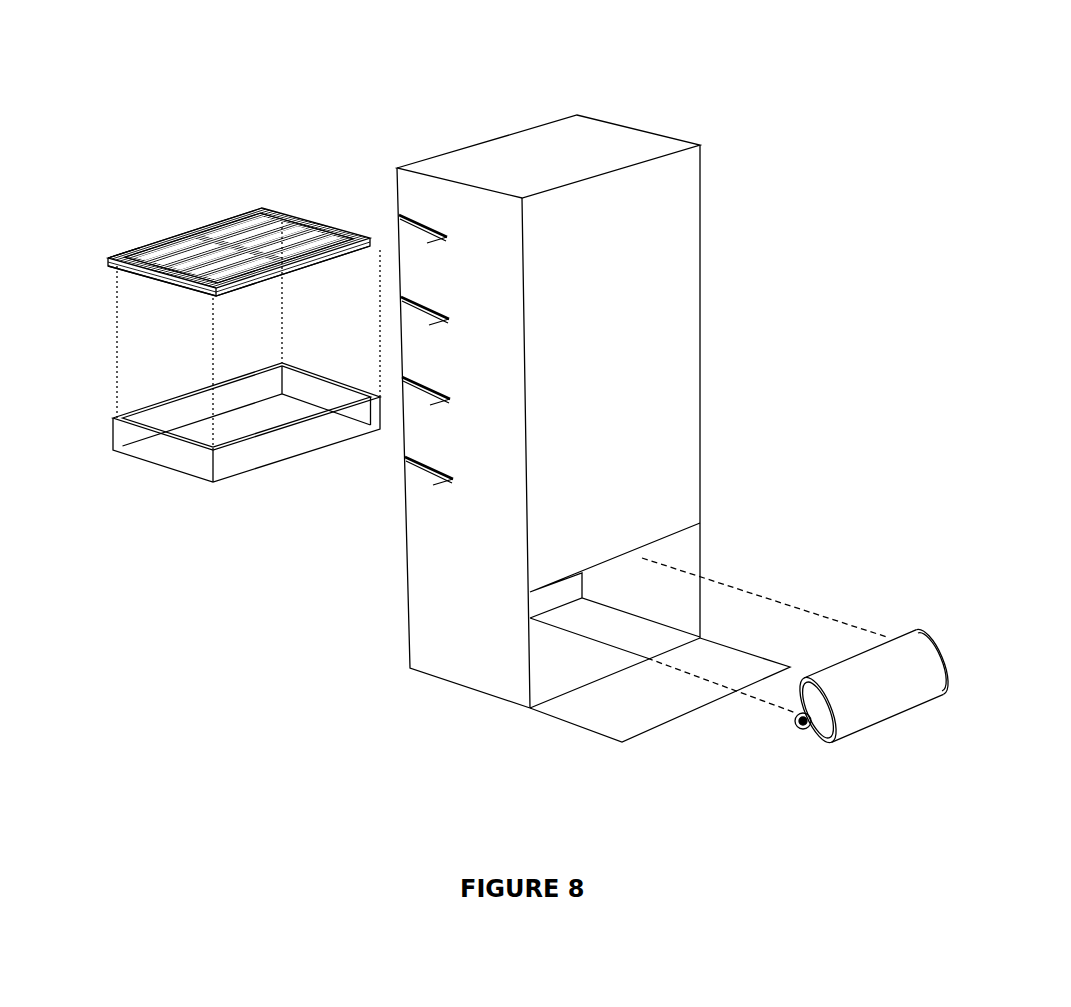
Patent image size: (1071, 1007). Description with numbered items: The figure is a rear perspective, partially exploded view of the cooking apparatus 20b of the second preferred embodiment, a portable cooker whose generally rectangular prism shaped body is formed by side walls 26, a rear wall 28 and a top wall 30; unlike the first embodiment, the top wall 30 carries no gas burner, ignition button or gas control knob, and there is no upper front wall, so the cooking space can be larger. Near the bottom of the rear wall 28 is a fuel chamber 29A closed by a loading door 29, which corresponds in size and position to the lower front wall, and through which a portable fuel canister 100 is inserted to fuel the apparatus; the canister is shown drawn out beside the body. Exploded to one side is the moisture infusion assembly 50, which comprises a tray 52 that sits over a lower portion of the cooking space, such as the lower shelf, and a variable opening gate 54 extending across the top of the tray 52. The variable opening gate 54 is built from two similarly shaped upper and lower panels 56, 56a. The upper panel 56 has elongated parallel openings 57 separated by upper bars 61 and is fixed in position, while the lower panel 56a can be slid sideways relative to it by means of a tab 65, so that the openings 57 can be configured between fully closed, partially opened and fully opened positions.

The cooking apparatus 20b is at (773, 157).
The side walls 26 is at (453, 556).
The rear wall 28 is at (680, 380).
The loading door 29 is at (670, 706).
The fuel chamber 29A is at (660, 576).
The top wall 30 is at (557, 146).
The moisture infusion assembly 50 is at (143, 226).
The tray 52 is at (148, 443).
The variable opening gate 54 is at (111, 247).
The upper panel 56 is at (123, 263).
The lower panel 56a is at (147, 281).
The openings 57 is at (272, 229).
The upper bars 61 is at (312, 235).
The tab 65 is at (138, 247).
The portable fuel canister 100 is at (857, 727).